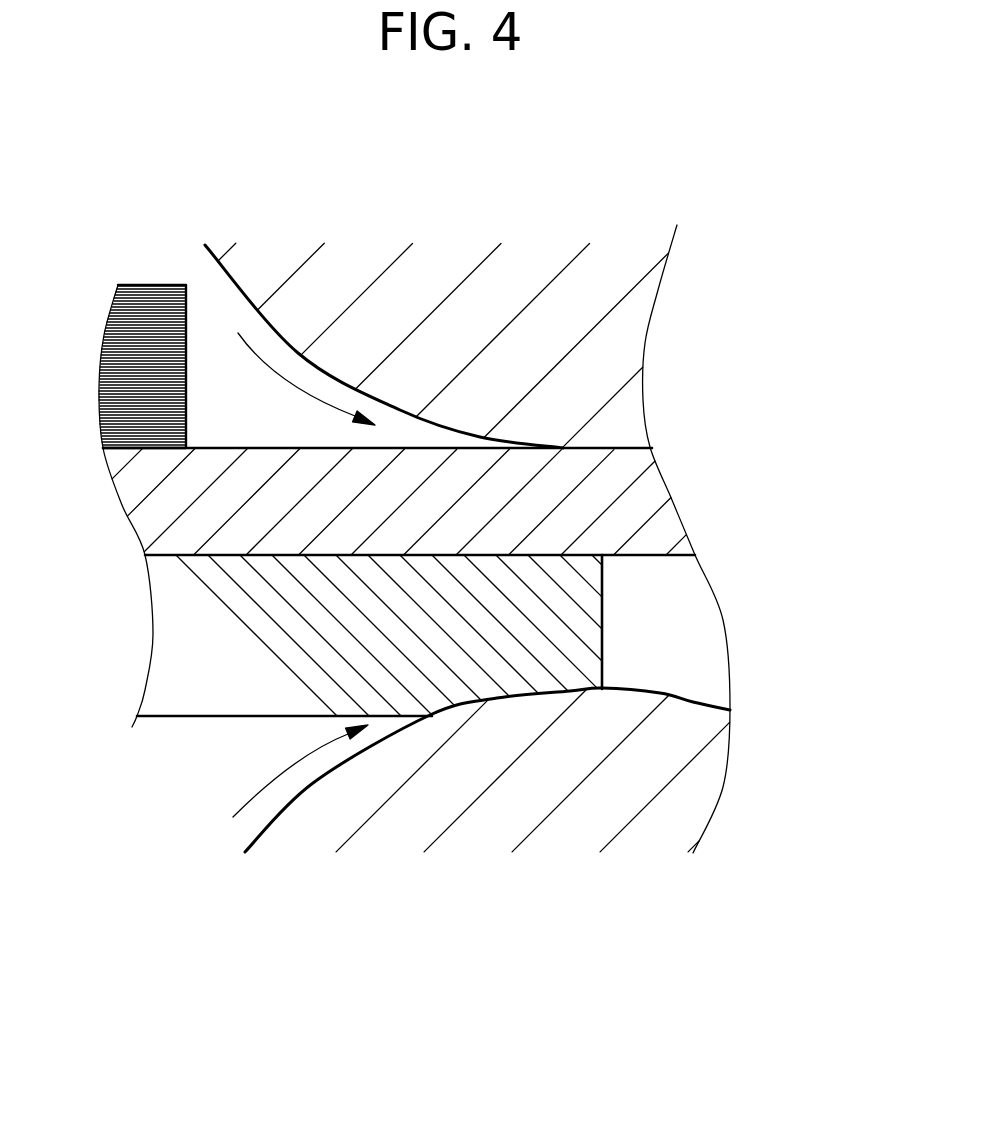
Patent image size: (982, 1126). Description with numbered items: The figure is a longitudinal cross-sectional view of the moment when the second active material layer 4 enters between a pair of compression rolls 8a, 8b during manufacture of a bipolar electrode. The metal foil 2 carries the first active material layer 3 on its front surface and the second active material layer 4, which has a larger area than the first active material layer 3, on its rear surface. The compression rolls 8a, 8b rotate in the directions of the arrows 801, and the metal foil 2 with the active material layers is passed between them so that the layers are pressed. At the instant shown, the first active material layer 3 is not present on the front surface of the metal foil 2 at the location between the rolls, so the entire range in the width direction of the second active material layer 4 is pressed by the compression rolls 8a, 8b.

The metal foil 2 is at (165, 516).
The first active material layer 3 is at (137, 327).
The second active material layer 4 is at (187, 651).
The compression roll 8a is at (602, 343).
The compression roll 8b is at (667, 803).
The arrows 801 is at (297, 385).